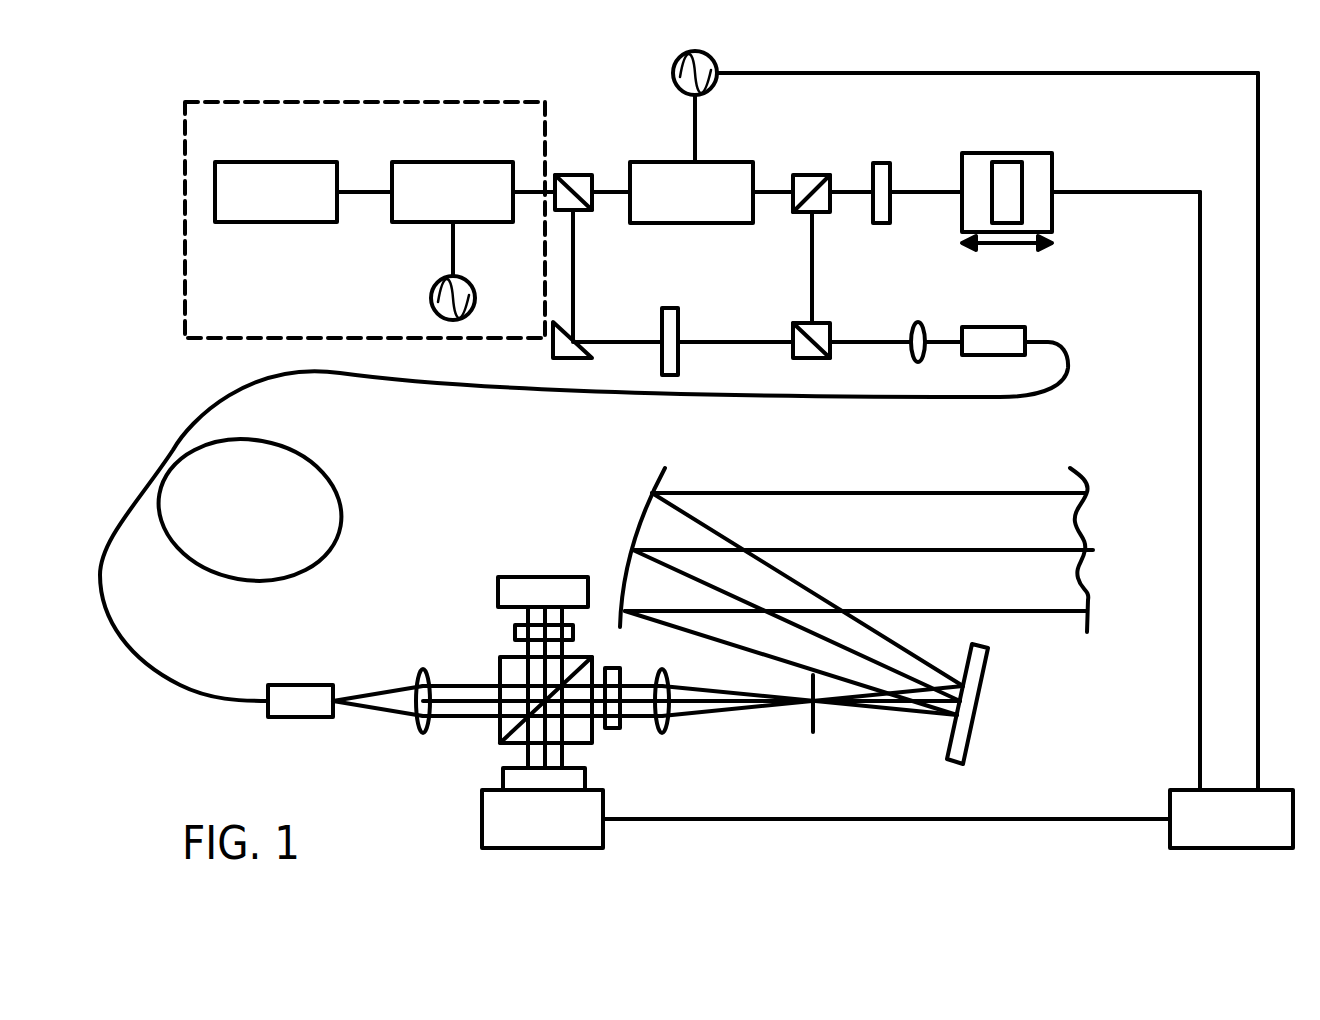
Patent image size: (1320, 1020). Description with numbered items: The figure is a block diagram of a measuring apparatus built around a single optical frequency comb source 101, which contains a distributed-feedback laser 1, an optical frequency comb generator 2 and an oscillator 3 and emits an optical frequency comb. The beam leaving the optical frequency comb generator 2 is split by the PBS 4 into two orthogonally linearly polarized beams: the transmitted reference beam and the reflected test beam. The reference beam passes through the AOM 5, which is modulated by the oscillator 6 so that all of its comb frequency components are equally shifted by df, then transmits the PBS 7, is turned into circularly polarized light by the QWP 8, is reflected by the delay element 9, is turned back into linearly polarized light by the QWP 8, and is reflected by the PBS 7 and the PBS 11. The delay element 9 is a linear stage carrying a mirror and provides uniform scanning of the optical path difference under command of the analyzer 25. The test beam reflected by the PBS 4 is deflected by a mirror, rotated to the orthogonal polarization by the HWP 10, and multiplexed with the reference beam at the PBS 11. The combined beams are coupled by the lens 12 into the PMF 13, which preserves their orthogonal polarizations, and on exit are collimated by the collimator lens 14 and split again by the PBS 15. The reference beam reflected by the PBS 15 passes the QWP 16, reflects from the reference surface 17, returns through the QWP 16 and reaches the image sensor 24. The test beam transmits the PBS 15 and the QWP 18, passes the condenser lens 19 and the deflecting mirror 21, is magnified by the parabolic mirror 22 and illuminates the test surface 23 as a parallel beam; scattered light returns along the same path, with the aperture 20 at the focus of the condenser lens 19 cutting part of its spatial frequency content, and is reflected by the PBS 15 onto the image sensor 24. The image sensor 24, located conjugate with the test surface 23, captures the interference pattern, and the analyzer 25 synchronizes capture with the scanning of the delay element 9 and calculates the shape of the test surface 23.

The optical frequency comb source 101 is at (468, 103).
The distributed-feedback laser 1 is at (280, 170).
The optical frequency comb generator 2 is at (450, 170).
The oscillator 3 is at (462, 286).
The polarization beam splitter 4 is at (579, 184).
The acoustic optical modulator 5 is at (712, 174).
The oscillator 6 is at (720, 68).
The polarization beam splitter 7 is at (808, 180).
The quarter waveplate 8 is at (888, 170).
The delay element 9 is at (1015, 170).
The half waveplate 10 is at (677, 320).
The polarization beam splitter 11 is at (822, 332).
The lens 12 is at (922, 333).
The polarization maintaining fiber 13 is at (1062, 350).
The collimator lens 14 is at (418, 678).
The polarization beam splitter 15 is at (552, 675).
The quarter waveplate 16 is at (515, 636).
The reference surface 17 is at (540, 587).
The quarter waveplate 18 is at (613, 684).
The condenser lens 19 is at (667, 690).
The aperture 20 is at (810, 713).
The deflecting mirror 21 is at (985, 690).
The parabolic mirror 22 is at (655, 480).
The test surface 23 is at (1076, 472).
The image sensor 24 is at (594, 803).
The analyzer 25 is at (1272, 803).